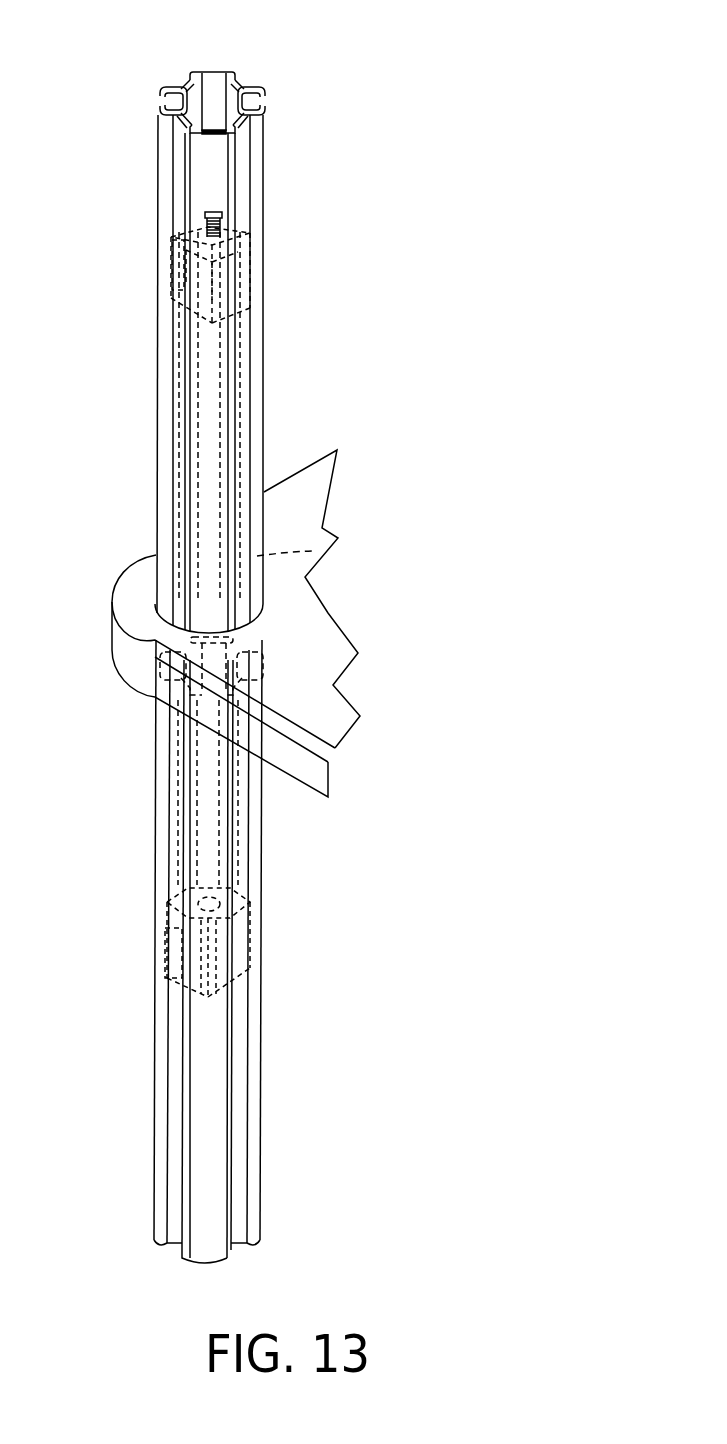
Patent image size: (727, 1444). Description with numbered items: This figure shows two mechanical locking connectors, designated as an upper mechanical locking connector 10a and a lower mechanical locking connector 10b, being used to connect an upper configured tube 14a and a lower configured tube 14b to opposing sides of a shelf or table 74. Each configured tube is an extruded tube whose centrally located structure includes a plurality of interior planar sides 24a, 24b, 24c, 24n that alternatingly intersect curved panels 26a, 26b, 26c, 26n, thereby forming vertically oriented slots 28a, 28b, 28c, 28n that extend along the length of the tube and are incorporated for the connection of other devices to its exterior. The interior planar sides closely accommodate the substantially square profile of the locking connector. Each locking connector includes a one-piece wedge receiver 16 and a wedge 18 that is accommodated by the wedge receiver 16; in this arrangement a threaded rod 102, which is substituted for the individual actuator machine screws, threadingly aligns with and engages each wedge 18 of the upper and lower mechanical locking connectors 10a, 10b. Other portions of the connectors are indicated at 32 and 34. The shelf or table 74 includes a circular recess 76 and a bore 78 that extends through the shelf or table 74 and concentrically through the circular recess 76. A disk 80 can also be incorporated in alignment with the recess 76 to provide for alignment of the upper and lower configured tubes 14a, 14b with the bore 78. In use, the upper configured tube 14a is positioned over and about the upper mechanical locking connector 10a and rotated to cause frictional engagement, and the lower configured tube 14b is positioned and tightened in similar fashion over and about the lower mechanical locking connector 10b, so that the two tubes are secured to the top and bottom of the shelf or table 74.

The upper configured tube 14a is at (157, 377).
The lower configured tube 14b is at (157, 752).
The curved panel 26a is at (213, 73).
The curved panel 26b is at (267, 102).
The curved panel 26c is at (221, 157).
The curved panel 26n is at (161, 131).
The vertically oriented slot 28a is at (187, 85).
The vertically oriented slot 28b is at (243, 91).
The vertically oriented slot 28c is at (244, 146).
The vertically oriented slot 28n is at (176, 166).
The interior planar side 24a is at (191, 102).
The interior planar side 24b is at (235, 93).
The interior planar side 24c is at (242, 112).
The interior planar side 24n is at (187, 115).
The threaded rod 102 is at (200, 209).
The wedge receiver 16 is at (168, 267).
The upper mechanical locking connector 10a is at (160, 296).
The lower mechanical locking connector 10b is at (160, 900).
The wedge 18 is at (252, 226).
The connector side face 32 is at (252, 275).
The connector side member 34 is at (170, 243).
The shelf or table 74 is at (127, 603).
The circular recess 76 is at (112, 643).
The bore 78 is at (318, 552).
The disk 80 is at (262, 617).